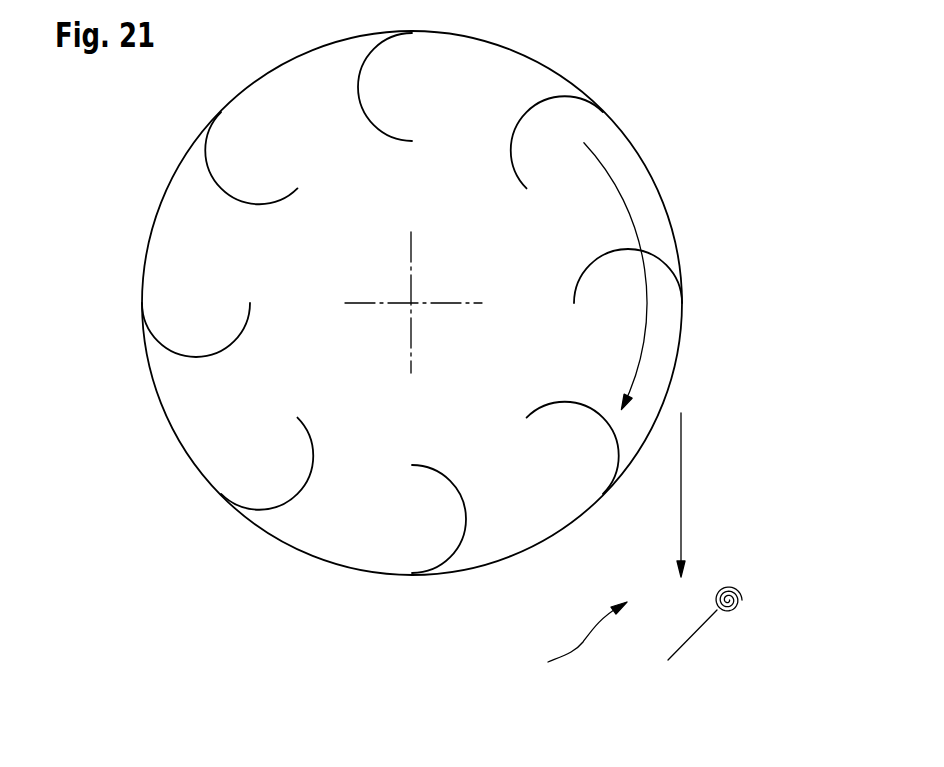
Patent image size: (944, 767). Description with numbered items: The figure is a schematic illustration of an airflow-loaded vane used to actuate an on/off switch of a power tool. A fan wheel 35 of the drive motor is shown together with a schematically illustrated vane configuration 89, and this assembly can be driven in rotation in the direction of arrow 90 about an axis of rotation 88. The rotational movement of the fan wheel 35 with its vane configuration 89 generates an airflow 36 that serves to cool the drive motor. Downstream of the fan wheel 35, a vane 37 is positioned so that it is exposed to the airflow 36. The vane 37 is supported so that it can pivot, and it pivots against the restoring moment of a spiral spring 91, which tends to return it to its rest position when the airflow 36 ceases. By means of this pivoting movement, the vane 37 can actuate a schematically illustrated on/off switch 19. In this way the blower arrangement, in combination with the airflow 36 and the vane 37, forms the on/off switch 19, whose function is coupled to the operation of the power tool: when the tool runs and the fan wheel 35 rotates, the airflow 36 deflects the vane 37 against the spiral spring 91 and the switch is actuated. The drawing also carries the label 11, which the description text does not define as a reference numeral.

The fan wheel 35 is at (158, 402).
The axis of rotation 88 is at (411, 303).
The vane configuration 89 is at (315, 457).
The arrow 90 is at (647, 315).
The airflow 36 is at (683, 487).
The hand-held power tool 11 is at (731, 656).
The spiral spring 91 is at (737, 615).
The vane 37 is at (690, 640).
The on/off switch 19 is at (574, 642).